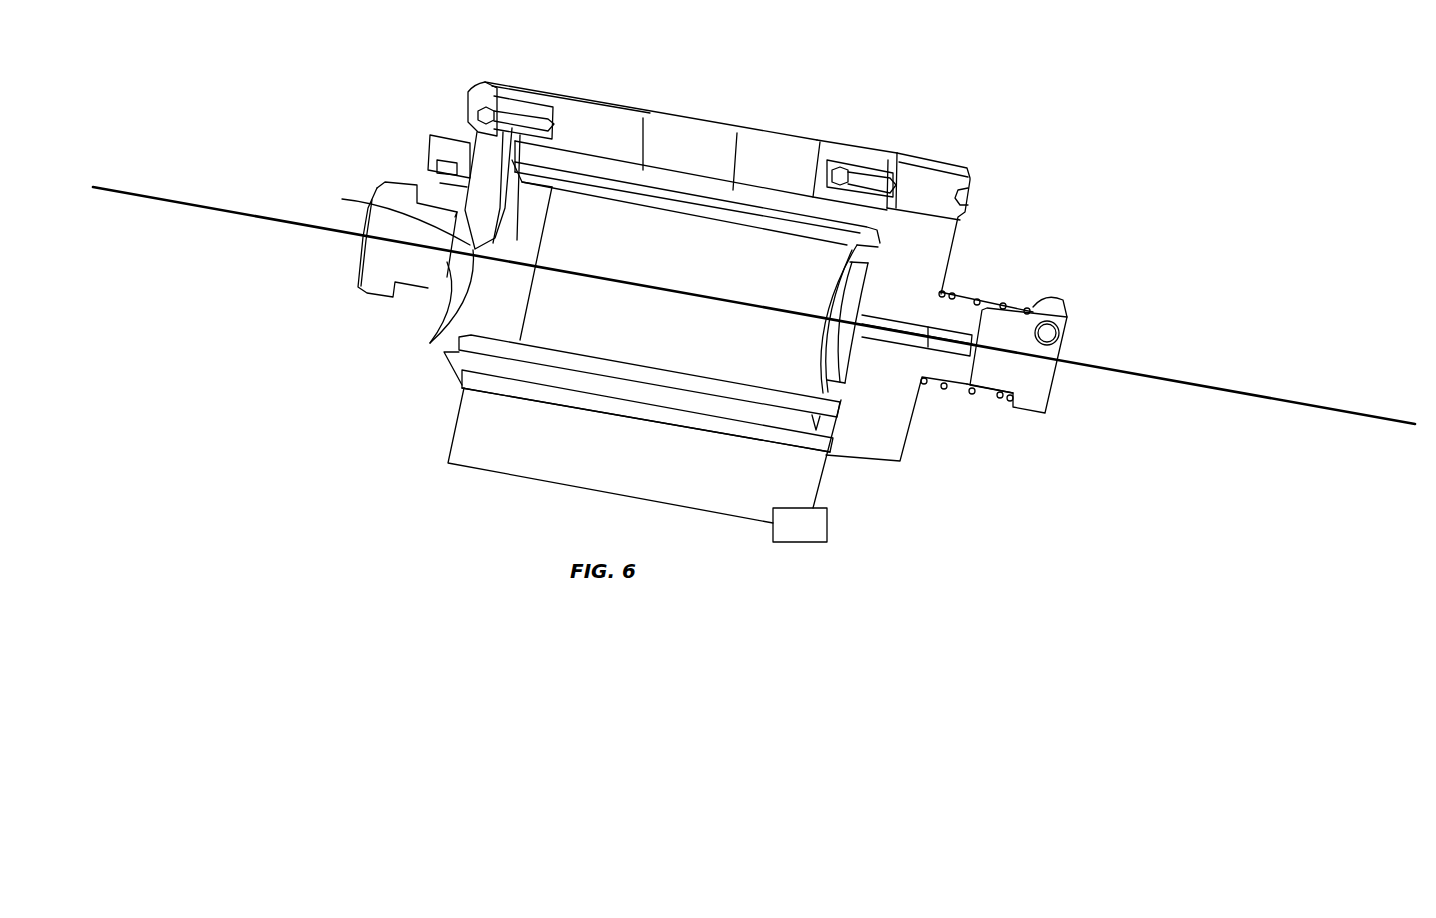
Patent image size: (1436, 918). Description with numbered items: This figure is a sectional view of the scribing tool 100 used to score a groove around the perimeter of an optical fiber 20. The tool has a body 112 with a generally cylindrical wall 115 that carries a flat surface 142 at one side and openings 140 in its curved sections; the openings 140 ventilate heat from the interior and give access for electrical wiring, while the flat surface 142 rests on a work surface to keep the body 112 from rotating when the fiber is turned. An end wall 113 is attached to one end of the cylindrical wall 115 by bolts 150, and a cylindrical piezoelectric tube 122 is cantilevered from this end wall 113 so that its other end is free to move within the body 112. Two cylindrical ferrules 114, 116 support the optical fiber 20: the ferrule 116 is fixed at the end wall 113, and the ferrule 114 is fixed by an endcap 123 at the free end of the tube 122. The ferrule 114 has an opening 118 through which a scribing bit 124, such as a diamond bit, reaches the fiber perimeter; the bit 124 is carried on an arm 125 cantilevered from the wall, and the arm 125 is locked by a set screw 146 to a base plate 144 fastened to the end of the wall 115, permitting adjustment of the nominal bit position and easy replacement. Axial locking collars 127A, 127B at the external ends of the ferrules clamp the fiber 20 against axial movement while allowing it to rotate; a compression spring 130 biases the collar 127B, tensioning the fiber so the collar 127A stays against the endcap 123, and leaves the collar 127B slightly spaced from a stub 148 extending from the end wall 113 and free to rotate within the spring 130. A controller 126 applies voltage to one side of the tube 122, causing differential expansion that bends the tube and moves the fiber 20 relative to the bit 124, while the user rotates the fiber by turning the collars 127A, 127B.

The optical fiber 20 is at (1135, 368).
The fiber cleaver assembly 100 is at (785, 82).
The body 112 is at (942, 158).
The end wall 113 is at (900, 461).
The ferrule 114 is at (430, 343).
The cylindrical wall 115 is at (695, 422).
The ferrule 116 is at (902, 338).
The opening 118 is at (445, 297).
The piezoelectric tube 122 is at (616, 370).
The endcap 123 is at (491, 330).
The scribing bit 124 is at (388, 266).
The arm 125 is at (493, 170).
The controller 126 is at (800, 525).
The axial locking collar 127A is at (358, 288).
The axial locking collar 127B is at (1042, 407).
The compression spring 130 is at (972, 383).
The openings 140 is at (697, 125).
The flat surface 142 is at (738, 440).
The base plate 144 is at (470, 93).
The locking set screw 146 is at (428, 157).
The stub 148 is at (965, 307).
The bolts 150 is at (968, 197).